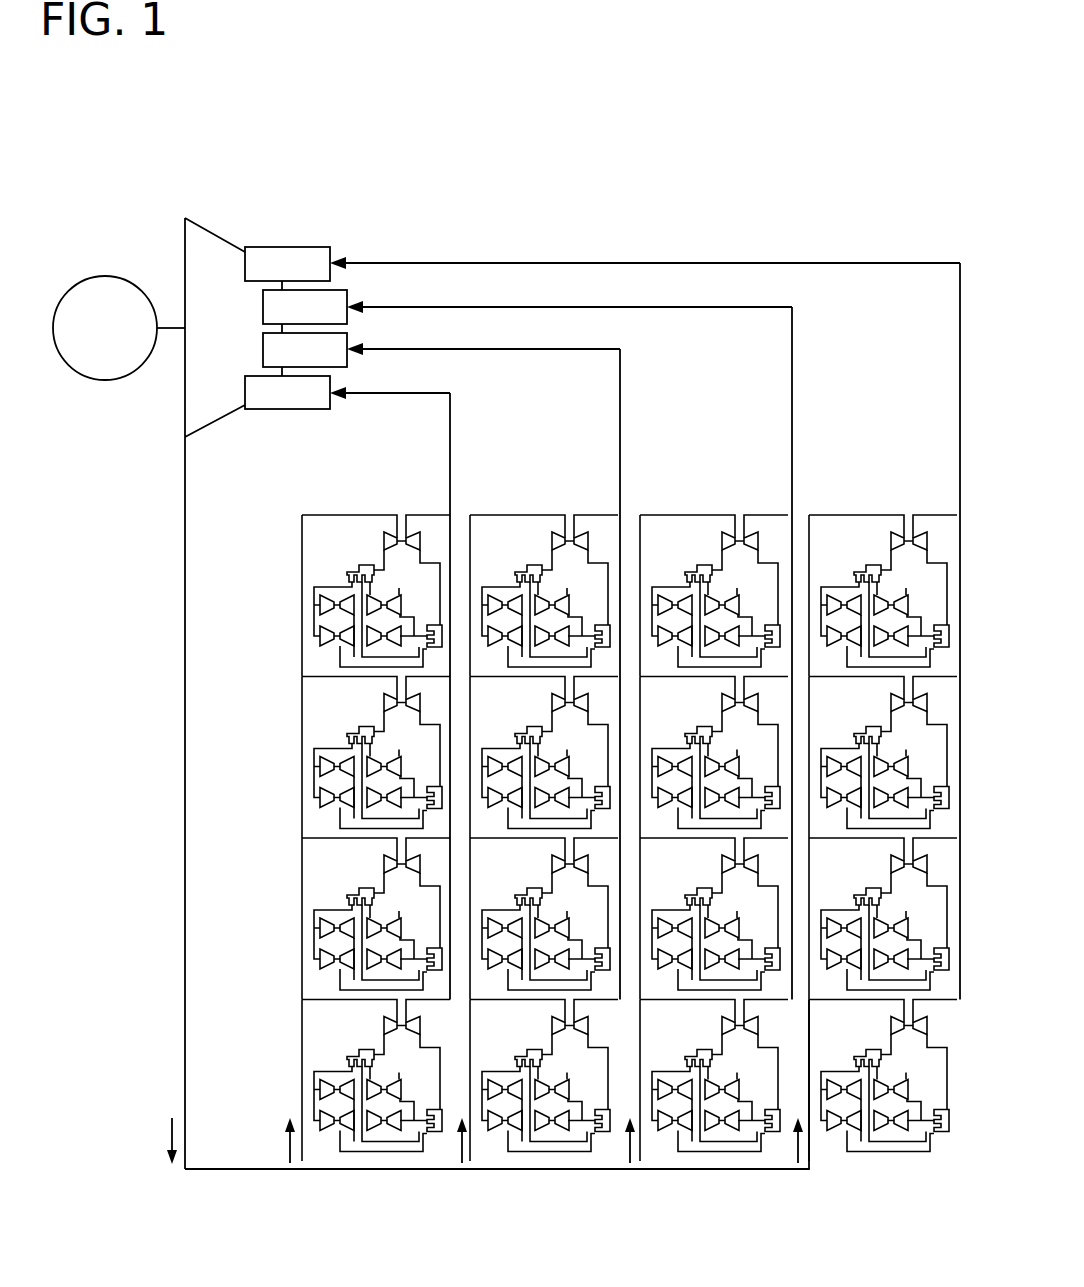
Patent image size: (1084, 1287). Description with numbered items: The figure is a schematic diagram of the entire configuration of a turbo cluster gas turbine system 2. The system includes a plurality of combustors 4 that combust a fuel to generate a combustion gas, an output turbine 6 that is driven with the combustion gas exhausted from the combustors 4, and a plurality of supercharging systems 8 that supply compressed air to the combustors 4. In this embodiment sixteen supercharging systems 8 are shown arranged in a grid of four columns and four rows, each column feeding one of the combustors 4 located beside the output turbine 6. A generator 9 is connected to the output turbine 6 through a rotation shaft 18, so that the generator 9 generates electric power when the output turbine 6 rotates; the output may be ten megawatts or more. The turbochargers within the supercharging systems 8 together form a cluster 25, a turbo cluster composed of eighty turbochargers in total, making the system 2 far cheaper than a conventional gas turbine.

The turbo cluster gas turbine system 2 is at (779, 109).
The combustor 4 is at (333, 249).
The output turbine 6 is at (212, 234).
The supercharging system 8 is at (629, 838).
The generator 9 is at (105, 276).
The rotation shaft 18 is at (168, 330).
The cluster 25 is at (843, 1168).